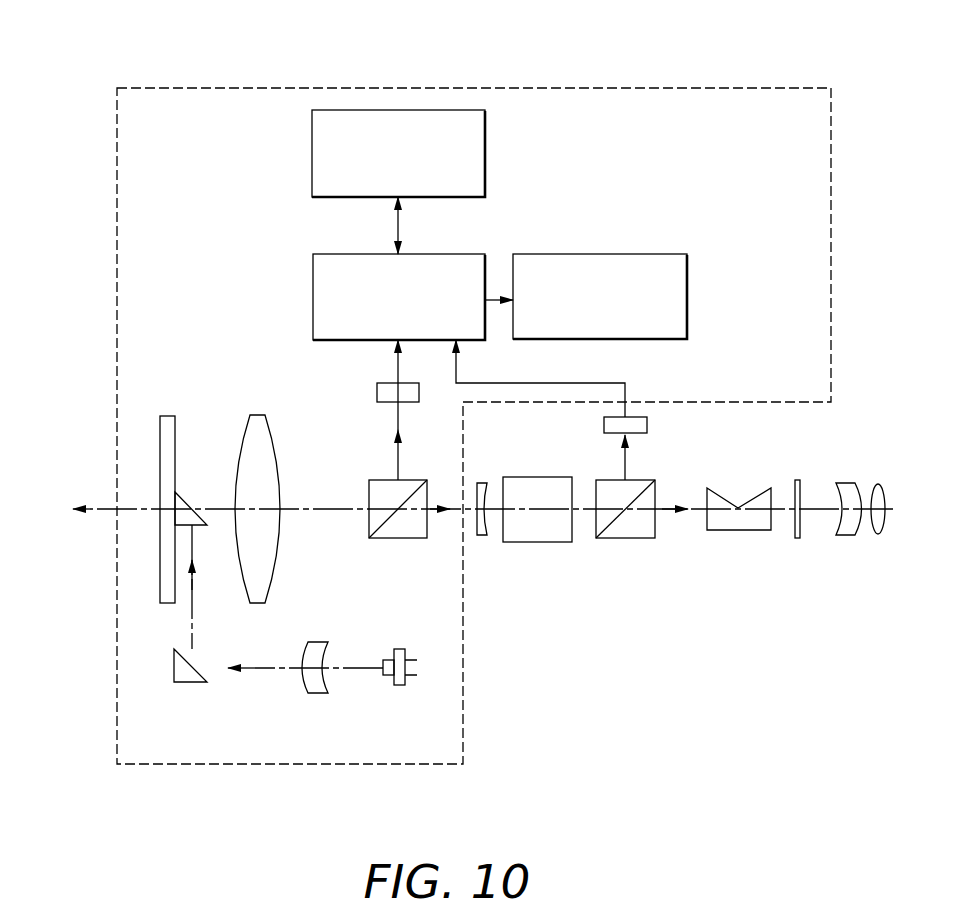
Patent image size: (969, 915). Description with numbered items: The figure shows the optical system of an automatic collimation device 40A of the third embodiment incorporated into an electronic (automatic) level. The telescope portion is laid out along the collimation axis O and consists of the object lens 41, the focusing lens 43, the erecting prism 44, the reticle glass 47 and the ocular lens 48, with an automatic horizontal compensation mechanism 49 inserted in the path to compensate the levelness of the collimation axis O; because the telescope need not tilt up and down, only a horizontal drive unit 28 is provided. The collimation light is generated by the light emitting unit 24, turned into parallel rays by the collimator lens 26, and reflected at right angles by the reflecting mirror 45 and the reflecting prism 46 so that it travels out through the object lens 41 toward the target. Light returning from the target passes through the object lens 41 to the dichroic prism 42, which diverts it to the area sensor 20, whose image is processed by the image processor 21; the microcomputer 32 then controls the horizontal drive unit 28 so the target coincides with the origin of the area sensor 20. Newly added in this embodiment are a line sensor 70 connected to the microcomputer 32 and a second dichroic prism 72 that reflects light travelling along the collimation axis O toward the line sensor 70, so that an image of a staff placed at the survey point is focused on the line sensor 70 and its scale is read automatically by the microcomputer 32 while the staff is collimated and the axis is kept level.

The automatic collimation device 40A is at (474, 88).
The image processor 21 is at (312, 151).
The microcomputer 32 is at (313, 296).
The horizontal drive unit 28 is at (687, 300).
The area sensor 20 is at (377, 391).
The line sensor 70 is at (604, 421).
The object lens 41 is at (273, 440).
The reflecting prism 46 is at (181, 491).
The collimation axis O is at (58, 509).
The dichroic prism 42 is at (397, 541).
The focusing lens 43 is at (483, 483).
The automatic horizontal compensation mechanism 49 is at (540, 543).
The dichroic prism 72 is at (624, 541).
The erecting prism 44 is at (756, 493).
The reticle glass 47 is at (802, 490).
The ocular lens 48 is at (866, 490).
The reflecting mirror 45 is at (188, 684).
The collimator lens 26 is at (318, 694).
The light emitting unit 24 is at (399, 686).